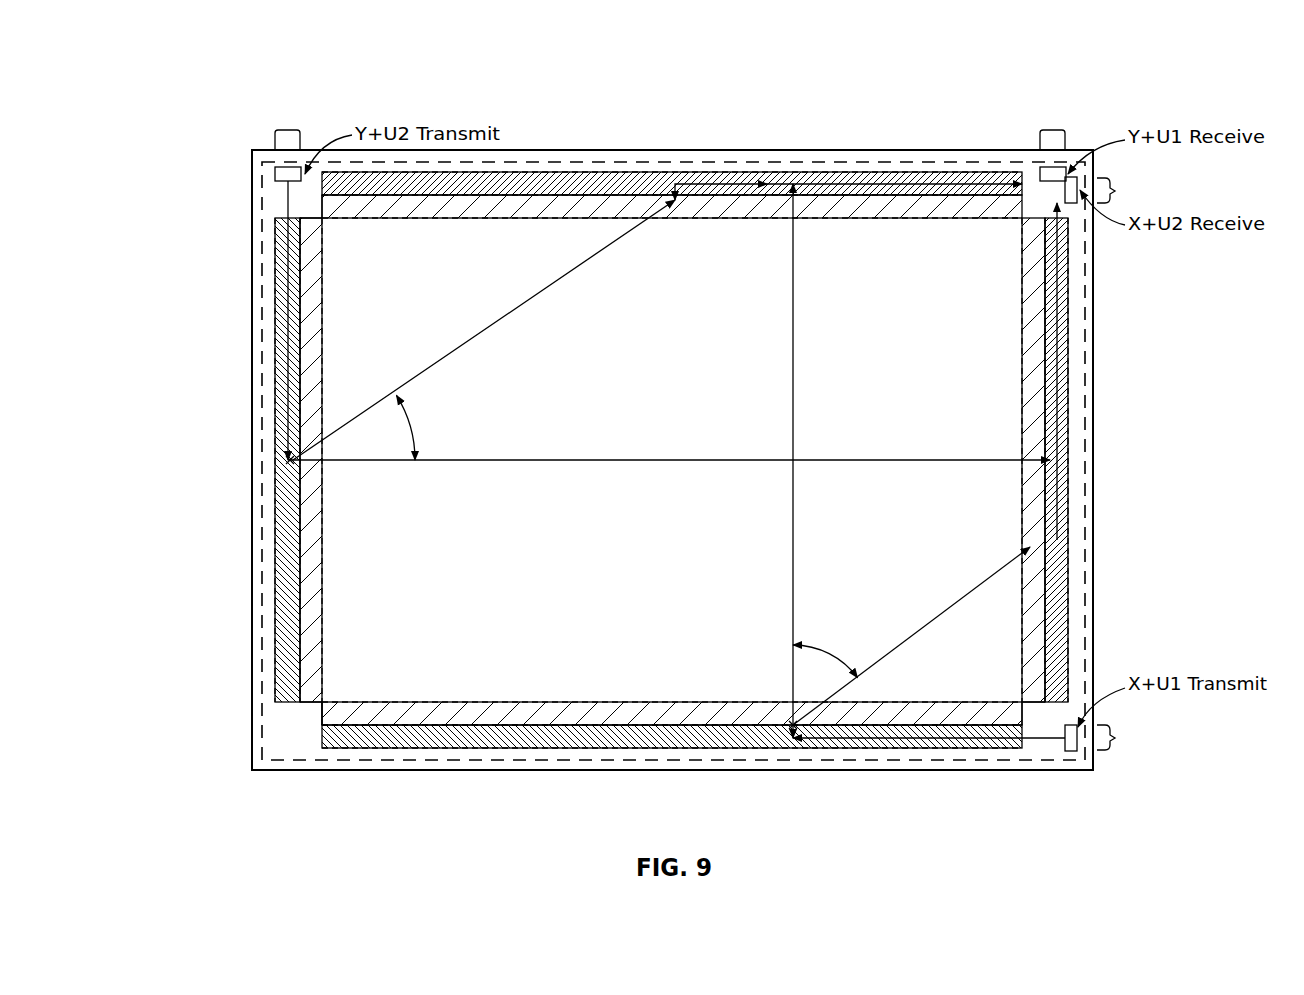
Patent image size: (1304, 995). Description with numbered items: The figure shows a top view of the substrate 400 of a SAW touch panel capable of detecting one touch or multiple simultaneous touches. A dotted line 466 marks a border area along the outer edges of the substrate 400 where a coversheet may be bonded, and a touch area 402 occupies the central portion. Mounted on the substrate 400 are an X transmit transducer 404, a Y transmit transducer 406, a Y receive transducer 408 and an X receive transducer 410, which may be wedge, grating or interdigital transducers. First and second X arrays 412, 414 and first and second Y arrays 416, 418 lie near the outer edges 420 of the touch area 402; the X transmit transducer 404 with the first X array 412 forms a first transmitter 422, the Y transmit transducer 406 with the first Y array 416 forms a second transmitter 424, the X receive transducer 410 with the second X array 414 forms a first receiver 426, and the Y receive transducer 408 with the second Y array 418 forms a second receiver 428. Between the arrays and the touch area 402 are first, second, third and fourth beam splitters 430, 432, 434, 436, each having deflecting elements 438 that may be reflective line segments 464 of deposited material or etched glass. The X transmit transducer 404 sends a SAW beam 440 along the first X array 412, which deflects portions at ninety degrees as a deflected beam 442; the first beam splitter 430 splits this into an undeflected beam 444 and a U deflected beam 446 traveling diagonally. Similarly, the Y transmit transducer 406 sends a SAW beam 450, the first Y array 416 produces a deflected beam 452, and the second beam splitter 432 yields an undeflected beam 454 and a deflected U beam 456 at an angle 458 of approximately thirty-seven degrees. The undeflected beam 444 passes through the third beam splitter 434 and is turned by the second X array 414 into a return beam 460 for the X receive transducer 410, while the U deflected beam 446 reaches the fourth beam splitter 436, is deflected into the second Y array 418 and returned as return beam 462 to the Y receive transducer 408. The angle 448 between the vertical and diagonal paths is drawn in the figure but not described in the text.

The substrate 400 is at (262, 78).
The touch area 402 is at (667, 388).
The X transmit transducer 404 is at (1072, 752).
The Y transmit transducer 406 is at (275, 172).
The Y receive transducer 408 is at (1040, 173).
The X receive transducer 410 is at (1080, 207).
The first X array 412 is at (480, 750).
The second X array 414 is at (602, 172).
The first Y array 416 is at (272, 487).
The second Y array 418 is at (1072, 461).
The outer edges 420 is at (680, 219).
The first transmitter 422 is at (1128, 737).
The second transmitter 424 is at (288, 128).
The first receiver 426 is at (1128, 190).
The second receiver 428 is at (1055, 126).
The first beam splitter 430 is at (322, 722).
The second beam splitter 432 is at (312, 703).
The third beam splitter 434 is at (320, 208).
The fourth beam splitter 436 is at (1072, 722).
The deflecting elements 438 is at (385, 202).
The SAW beam 440 is at (875, 742).
The deflected beam 442 is at (790, 740).
The undeflected beam 444 is at (790, 572).
The U deflected beam 446 is at (937, 622).
The path angle 448 is at (848, 670).
The SAW beam 450 is at (285, 300).
The deflected beam 452 is at (284, 460).
The undeflected beam 454 is at (560, 463).
The deflected U beam 456 is at (500, 320).
The angle 458 is at (422, 432).
The return beam 460 is at (905, 182).
The return beam 462 is at (1052, 537).
The reflective line segments 464 is at (565, 727).
The dotted line 466 is at (768, 180).